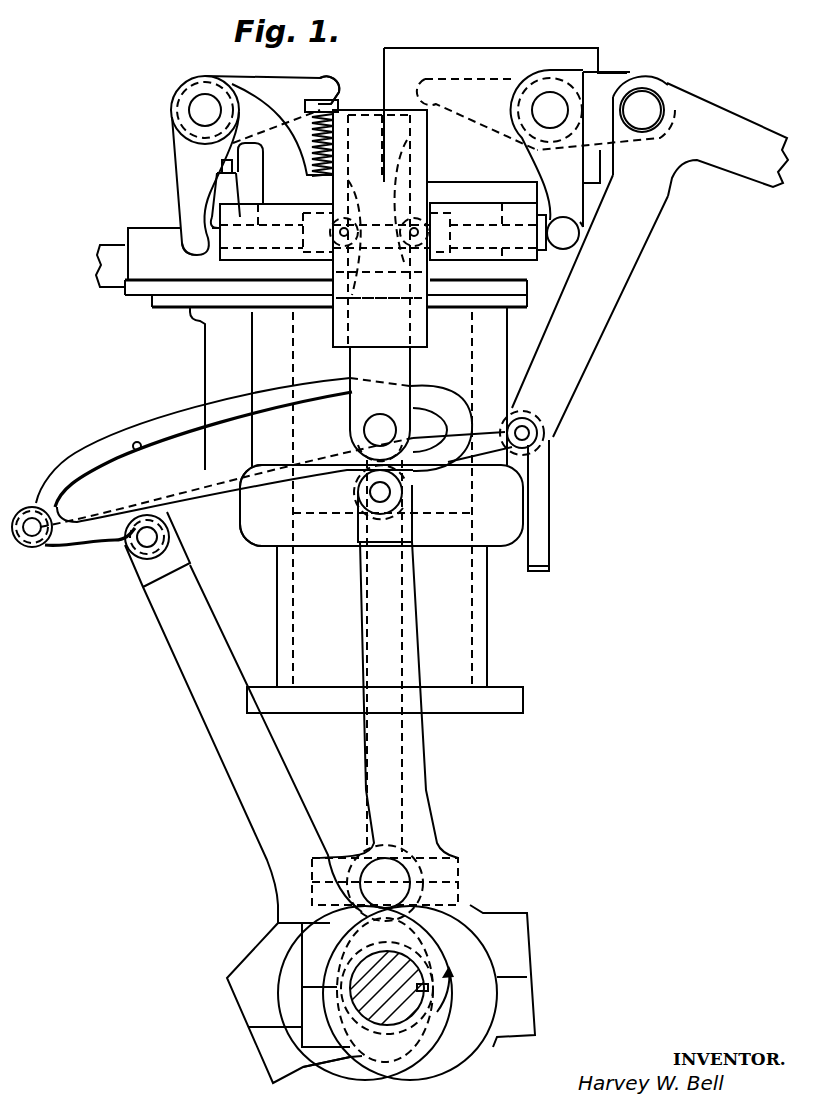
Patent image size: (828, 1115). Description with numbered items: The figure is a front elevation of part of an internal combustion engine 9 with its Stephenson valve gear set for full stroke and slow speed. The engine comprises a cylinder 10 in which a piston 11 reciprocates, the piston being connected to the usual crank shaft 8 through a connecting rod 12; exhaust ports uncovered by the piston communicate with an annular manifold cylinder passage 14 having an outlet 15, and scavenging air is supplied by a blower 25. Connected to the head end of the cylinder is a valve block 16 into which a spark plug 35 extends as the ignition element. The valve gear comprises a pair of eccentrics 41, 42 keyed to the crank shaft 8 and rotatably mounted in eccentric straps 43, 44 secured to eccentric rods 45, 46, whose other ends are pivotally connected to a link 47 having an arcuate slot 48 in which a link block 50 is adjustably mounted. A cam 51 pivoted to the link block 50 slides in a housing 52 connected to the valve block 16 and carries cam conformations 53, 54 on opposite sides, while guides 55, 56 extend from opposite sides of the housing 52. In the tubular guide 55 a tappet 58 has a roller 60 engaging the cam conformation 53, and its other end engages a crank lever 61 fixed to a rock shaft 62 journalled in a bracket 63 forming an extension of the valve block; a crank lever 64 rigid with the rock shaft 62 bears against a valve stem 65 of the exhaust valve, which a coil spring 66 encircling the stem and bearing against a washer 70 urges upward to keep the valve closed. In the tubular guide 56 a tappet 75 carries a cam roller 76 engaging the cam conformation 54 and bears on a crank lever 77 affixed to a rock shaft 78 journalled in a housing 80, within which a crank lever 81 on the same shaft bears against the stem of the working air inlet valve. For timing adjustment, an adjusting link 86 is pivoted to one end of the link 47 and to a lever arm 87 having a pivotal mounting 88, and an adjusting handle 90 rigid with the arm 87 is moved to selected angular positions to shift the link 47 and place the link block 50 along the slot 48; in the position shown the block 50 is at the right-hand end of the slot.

The crank shaft 8 is at (379, 963).
The internal combustion engine 9 is at (190, 343).
The cylinder 10 is at (488, 627).
The piston 11 is at (312, 515).
The connecting rod 12 is at (361, 752).
The annular manifold cylinder passage 14 is at (251, 535).
The outlet 15 is at (539, 525).
The valve block 16 is at (493, 277).
The blower 25 is at (204, 373).
The spark plug 35 is at (220, 183).
The eccentric 41 is at (483, 961).
The eccentric 42 is at (290, 953).
The eccentric strap 43 is at (477, 1047).
The eccentric strap 44 is at (338, 1069).
The eccentric rod 45 is at (424, 790).
The eccentric rod 46 is at (237, 786).
The link 47 is at (76, 452).
The arcuate slot 48 is at (134, 444).
The link block 50 is at (345, 429).
The cam 51 is at (350, 363).
The housing 52 is at (363, 108).
The cam conformation 53 is at (332, 200).
The cam conformation 54 is at (398, 170).
The guide 55 is at (272, 203).
The guide 56 is at (478, 202).
The tappet 58 is at (214, 256).
The roller 60 is at (335, 262).
The crank lever 61 is at (174, 182).
The rock shaft 62 is at (196, 109).
The bracket 63 is at (248, 102).
The crank lever 64 is at (270, 83).
The valve stem 65 is at (329, 101).
The coil spring 66 is at (310, 128).
The washer 70 is at (313, 102).
The tappet 75 is at (543, 252).
The cam roller 76 is at (417, 210).
The crank lever 77 is at (572, 238).
The rock shaft 78 is at (558, 104).
The housing 80 is at (527, 53).
The crank lever 81 is at (467, 79).
The adjusting link 86 is at (482, 436).
The lever arm 87 is at (578, 347).
The pivotal mounting 88 is at (640, 98).
The adjusting handle 90 is at (724, 114).